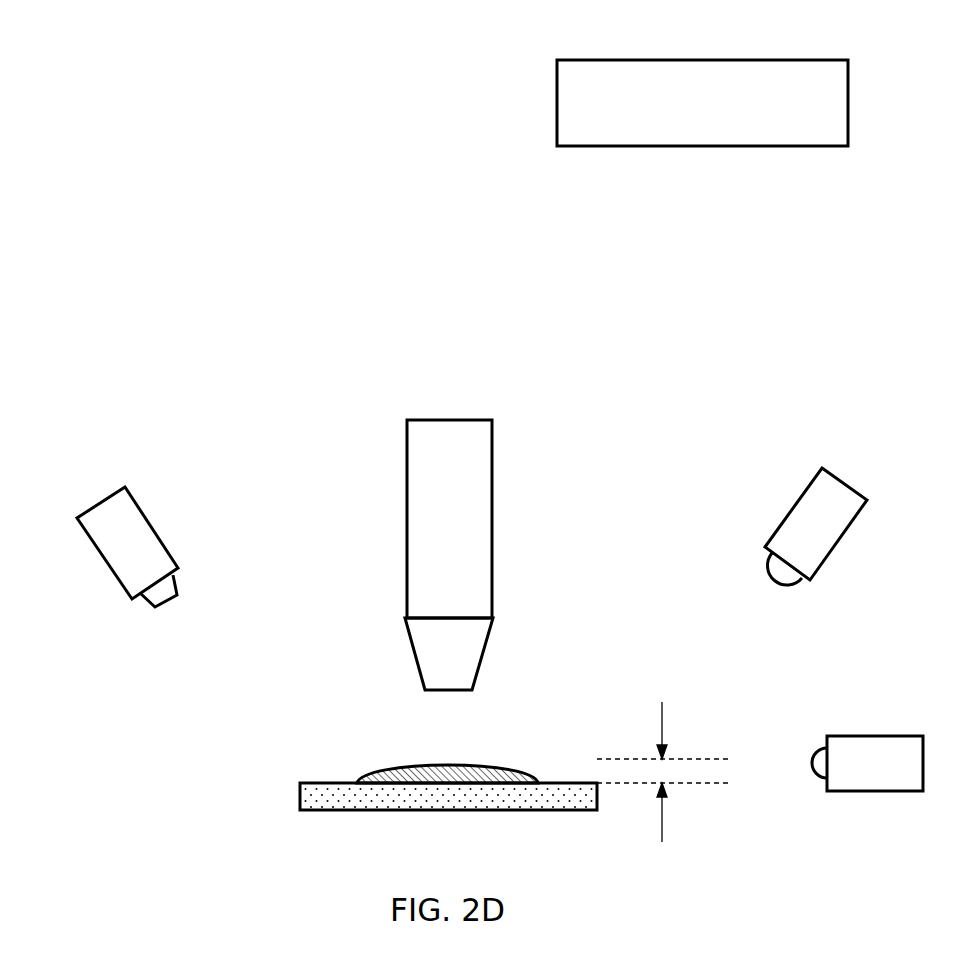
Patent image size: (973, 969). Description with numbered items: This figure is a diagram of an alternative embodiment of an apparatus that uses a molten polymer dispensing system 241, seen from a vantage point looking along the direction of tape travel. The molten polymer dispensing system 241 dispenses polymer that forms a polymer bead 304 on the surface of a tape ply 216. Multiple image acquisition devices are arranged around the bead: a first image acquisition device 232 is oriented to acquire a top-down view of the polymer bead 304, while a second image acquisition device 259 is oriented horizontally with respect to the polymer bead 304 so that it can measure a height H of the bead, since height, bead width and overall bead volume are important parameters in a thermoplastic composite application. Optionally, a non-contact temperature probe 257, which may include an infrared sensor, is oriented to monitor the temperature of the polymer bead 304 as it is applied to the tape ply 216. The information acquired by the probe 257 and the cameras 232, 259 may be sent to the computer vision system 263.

The computer vision system 263 is at (668, 70).
The molten polymer dispensing system 241 is at (448, 653).
The non-contact temperature probe 257 is at (115, 522).
The first image acquisition device 232 is at (805, 508).
The second image acquisition device 259 is at (870, 763).
The tape ply 216 is at (317, 797).
The polymer bead 304 is at (428, 770).
The height H is at (663, 728).